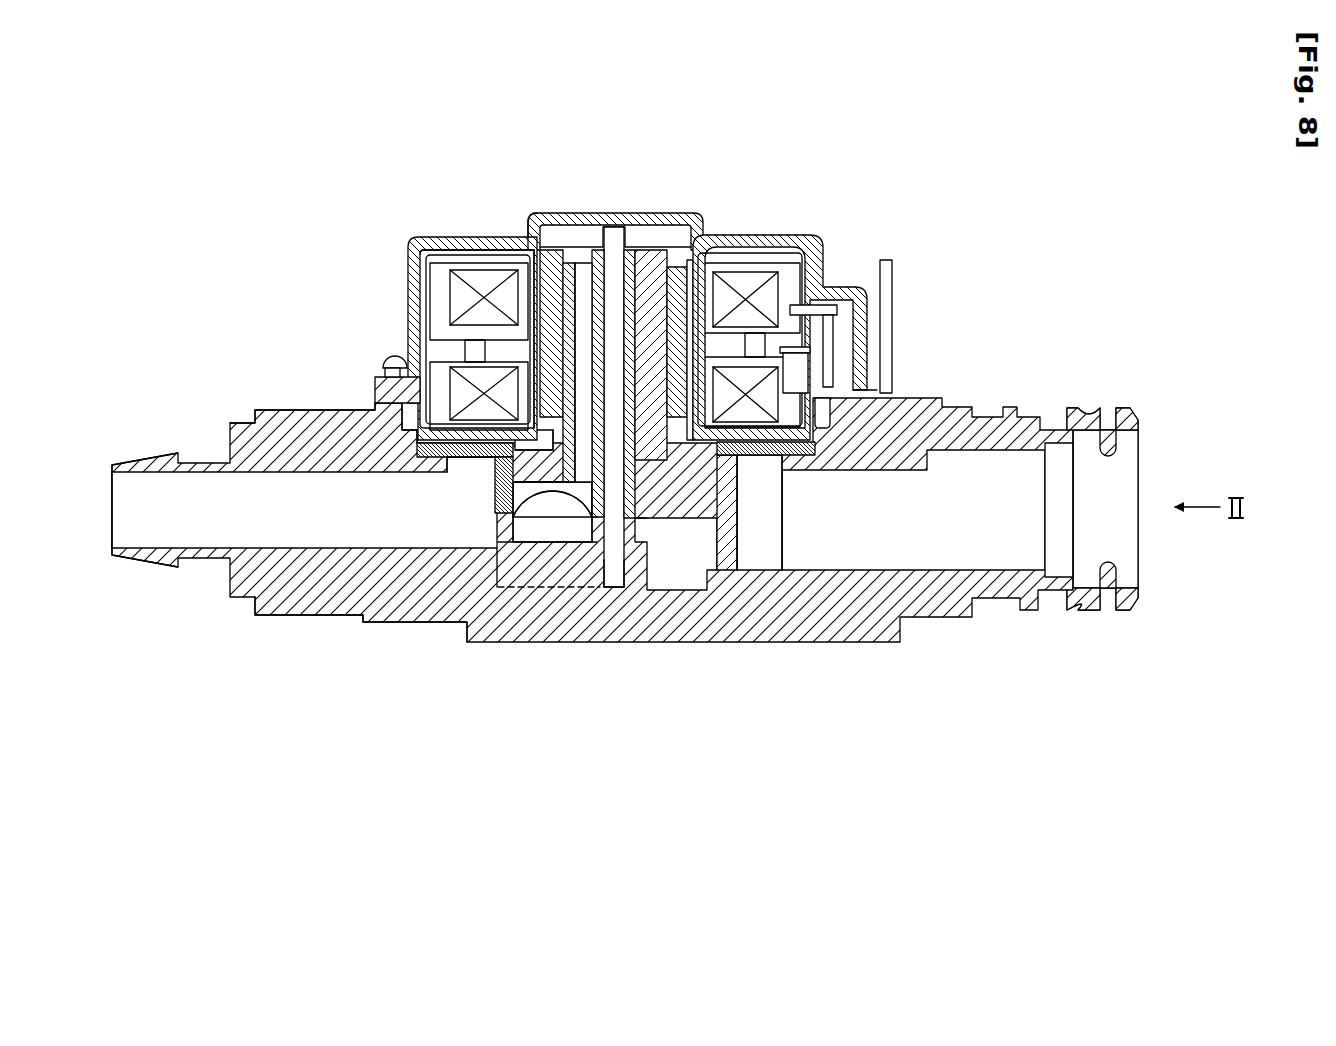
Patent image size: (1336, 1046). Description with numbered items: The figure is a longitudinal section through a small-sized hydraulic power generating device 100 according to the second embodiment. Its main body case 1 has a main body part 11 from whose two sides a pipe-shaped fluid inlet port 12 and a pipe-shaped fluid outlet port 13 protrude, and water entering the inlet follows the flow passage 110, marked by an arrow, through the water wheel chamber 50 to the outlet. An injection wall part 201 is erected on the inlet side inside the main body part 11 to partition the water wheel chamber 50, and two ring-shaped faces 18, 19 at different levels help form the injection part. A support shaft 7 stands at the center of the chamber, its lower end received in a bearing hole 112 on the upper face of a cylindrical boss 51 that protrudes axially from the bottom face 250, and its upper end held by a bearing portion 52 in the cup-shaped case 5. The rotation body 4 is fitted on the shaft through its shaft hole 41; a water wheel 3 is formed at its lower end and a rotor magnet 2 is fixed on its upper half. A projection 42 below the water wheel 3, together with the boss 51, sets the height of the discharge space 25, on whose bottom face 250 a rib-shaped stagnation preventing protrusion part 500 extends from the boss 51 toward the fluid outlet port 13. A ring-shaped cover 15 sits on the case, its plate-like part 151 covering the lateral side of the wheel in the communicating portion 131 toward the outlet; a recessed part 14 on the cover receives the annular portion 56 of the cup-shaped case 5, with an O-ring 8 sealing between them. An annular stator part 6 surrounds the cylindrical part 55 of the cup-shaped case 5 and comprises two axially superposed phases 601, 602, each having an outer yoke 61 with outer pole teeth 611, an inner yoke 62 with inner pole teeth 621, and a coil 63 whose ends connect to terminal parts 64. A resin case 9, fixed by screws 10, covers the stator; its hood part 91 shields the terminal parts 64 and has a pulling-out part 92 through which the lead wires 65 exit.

The main body case 1 is at (498, 587).
The rotor magnet 2 is at (700, 288).
The water wheel 3 is at (525, 505).
The rotation body 4 is at (703, 262).
The cup-shaped case 5 is at (688, 228).
The stator part 6 is at (776, 280).
The support shaft 7 is at (616, 587).
The O-ring 8 is at (415, 450).
The resin case 9 is at (476, 263).
The screws 10 is at (418, 346).
The main body part 11 is at (655, 600).
The fluid inlet port 12 is at (1020, 493).
The fluid outlet port 13 is at (153, 485).
The recessed part 14 is at (397, 377).
The cover 15 is at (410, 425).
The ring-shaped face 18 is at (775, 450).
The ring-shaped face 19 is at (800, 393).
The discharge space 25 is at (515, 520).
The shaft hole 41 is at (596, 575).
The projection 42 is at (505, 535).
The water wheel chamber 50 is at (540, 490).
The boss 51 is at (645, 588).
The bearing portion 52 is at (662, 212).
The cylindrical part 55 is at (530, 228).
The annular portion 56 is at (378, 392).
The outer yoke 61 is at (420, 280).
The inner yoke 62 is at (507, 287).
The coil 63 is at (474, 322).
The terminal parts 64 is at (843, 288).
The lead wires 65 is at (893, 288).
The hood part 91 is at (850, 293).
The pulling-out part 92 is at (840, 330).
The hydraulic power generating device 100 is at (318, 152).
The flow passage 110 is at (765, 475).
The bearing hole 112 is at (606, 587).
The communicating portion 131 is at (497, 548).
The plate-like part 151 is at (475, 575).
The injection wall part 201 is at (727, 520).
The bottom face 250 is at (672, 580).
The stagnation preventing protrusion part 500 is at (552, 470).
The phase 601 is at (362, 612).
The phase 602 is at (408, 268).
The outer pole teeth 611 is at (530, 302).
The inner pole teeth 621 is at (698, 308).